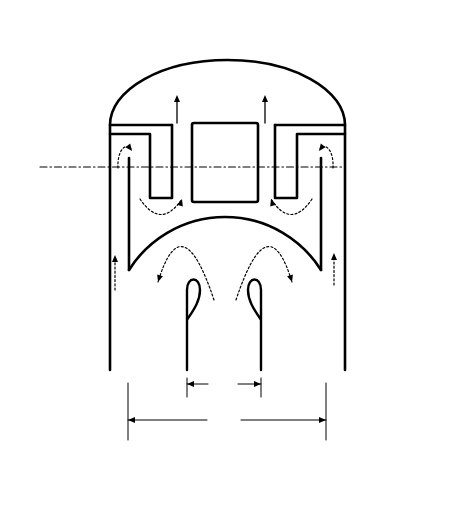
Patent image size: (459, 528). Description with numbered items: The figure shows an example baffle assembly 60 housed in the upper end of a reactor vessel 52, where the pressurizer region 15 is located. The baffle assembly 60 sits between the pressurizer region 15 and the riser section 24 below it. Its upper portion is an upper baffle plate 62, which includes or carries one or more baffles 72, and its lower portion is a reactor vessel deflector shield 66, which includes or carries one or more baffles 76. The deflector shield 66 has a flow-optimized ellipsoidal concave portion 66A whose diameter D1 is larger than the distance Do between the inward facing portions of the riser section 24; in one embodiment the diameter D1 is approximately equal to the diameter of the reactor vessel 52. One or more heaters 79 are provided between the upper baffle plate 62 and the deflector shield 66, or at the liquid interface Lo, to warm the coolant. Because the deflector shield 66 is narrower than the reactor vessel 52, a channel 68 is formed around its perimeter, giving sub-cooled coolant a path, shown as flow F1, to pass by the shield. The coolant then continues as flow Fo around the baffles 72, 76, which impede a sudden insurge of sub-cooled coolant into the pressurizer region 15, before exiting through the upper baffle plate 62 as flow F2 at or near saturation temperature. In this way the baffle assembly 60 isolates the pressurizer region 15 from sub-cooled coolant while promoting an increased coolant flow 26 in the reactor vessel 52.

The baffle assembly 60 is at (89, 120).
The reactor vessel 52 is at (210, 191).
The pressurizer region 15 is at (267, 65).
The upper baffle plate 62 is at (125, 137).
The baffle 72 is at (340, 147).
The heater 79 is at (197, 109).
The coolant flow F2 is at (284, 85).
The coolant flow Fo is at (267, 138).
The liquid interface Lo is at (178, 167).
The reactor vessel deflector shield 66 is at (87, 214).
The concave portion 66A is at (225, 258).
The baffle 76 is at (376, 209).
The channel 68 is at (380, 214).
The coolant flow F1 is at (259, 262).
The flow 26 is at (147, 325).
The riser section 24 is at (323, 325).
The distance Do is at (224, 386).
The diameter D1 is at (227, 411).